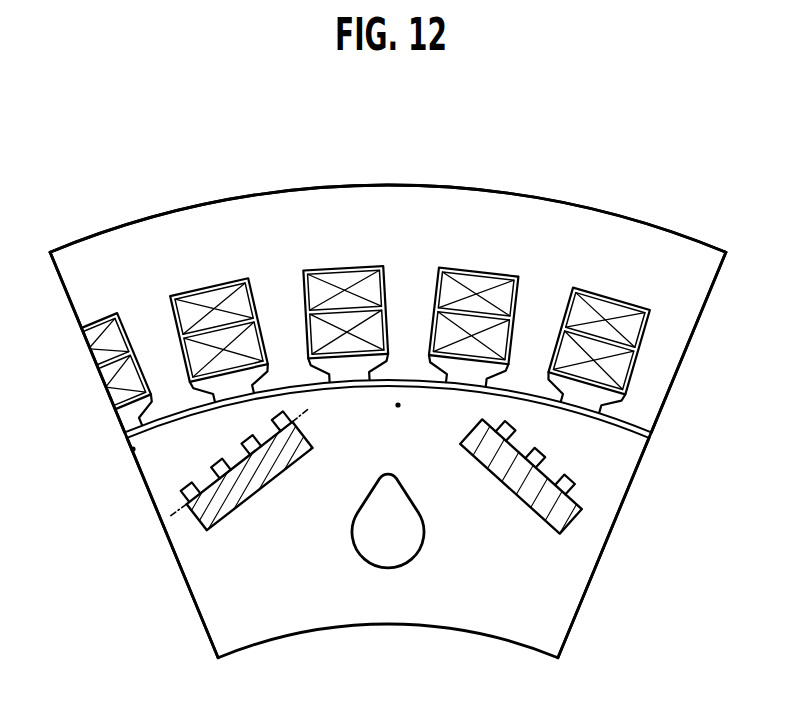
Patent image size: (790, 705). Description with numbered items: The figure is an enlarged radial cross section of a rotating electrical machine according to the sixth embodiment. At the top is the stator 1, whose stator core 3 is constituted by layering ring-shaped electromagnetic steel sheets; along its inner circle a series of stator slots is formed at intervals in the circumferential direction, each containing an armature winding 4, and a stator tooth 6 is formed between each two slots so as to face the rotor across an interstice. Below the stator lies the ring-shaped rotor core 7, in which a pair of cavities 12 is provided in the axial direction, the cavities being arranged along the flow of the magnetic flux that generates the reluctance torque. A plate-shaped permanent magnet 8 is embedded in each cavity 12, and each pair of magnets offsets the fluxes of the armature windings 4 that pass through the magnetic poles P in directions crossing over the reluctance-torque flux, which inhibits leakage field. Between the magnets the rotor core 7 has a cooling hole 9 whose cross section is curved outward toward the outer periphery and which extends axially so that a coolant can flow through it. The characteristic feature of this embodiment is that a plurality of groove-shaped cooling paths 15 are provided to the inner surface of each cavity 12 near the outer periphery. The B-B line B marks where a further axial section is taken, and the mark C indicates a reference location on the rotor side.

The stator 1 is at (655, 221).
The stator core 3 is at (157, 236).
The armature winding 4 is at (492, 296).
The stator tooth 6 is at (291, 376).
The rotor core 7 is at (538, 600).
The permanent magnet 8 is at (568, 523).
The cooling hole 9 is at (358, 545).
The cavity 12 is at (258, 496).
The groove-shaped cooling path 15 is at (186, 492).
The magnetic pole P is at (398, 404).
The point C on rotor side C is at (133, 449).
The B-B line B is at (176, 516).